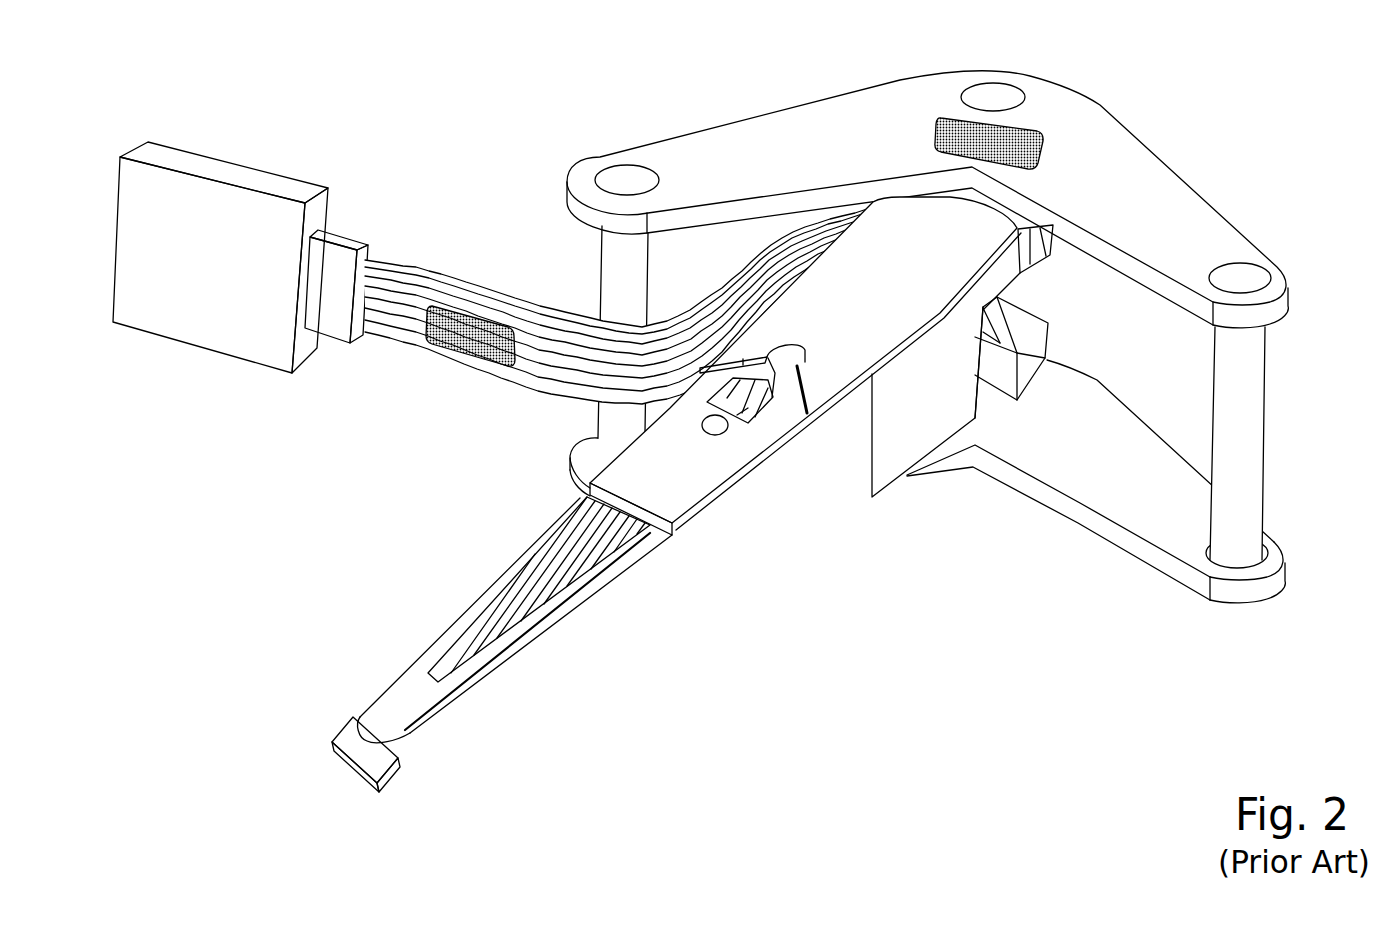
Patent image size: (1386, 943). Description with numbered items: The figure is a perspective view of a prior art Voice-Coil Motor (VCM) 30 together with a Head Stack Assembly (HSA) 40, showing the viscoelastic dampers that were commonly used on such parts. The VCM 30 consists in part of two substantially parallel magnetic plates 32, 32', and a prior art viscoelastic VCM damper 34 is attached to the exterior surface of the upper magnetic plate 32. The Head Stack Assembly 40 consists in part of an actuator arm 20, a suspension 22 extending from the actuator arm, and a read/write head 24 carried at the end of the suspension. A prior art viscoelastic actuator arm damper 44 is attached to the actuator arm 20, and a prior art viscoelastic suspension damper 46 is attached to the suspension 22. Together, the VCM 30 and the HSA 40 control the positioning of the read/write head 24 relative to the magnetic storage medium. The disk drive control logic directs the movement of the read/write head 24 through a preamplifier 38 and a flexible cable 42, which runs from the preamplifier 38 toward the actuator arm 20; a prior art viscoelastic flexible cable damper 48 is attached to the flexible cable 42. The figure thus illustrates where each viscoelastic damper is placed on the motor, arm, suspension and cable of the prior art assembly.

The actuator arm 20 is at (821, 383).
The suspension 22 is at (390, 720).
The read/write head 24 is at (358, 771).
The Voice-Coil Motor 30 is at (975, 328).
The magnetic plate 32 is at (927, 174).
The magnetic plate 32' is at (927, 498).
The viscoelastic VCM damper 34 is at (953, 117).
The preamplifier 38 is at (226, 292).
The Head Stack Assembly 40 is at (657, 700).
The flexible cable 42 is at (622, 320).
The viscoelastic actuator arm damper 44 is at (728, 423).
The viscoelastic suspension damper 46 is at (553, 563).
The viscoelastic flexible cable damper 48 is at (460, 345).